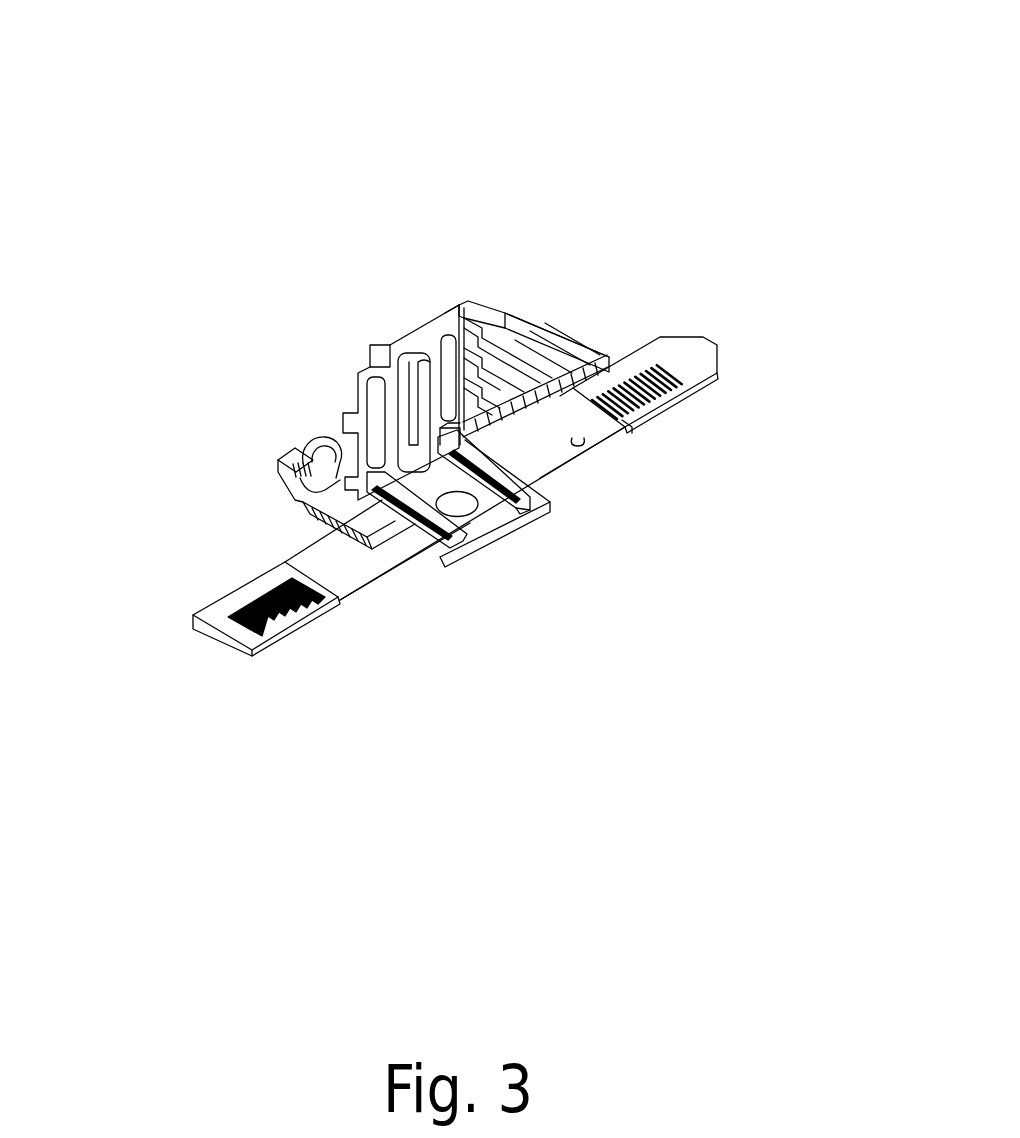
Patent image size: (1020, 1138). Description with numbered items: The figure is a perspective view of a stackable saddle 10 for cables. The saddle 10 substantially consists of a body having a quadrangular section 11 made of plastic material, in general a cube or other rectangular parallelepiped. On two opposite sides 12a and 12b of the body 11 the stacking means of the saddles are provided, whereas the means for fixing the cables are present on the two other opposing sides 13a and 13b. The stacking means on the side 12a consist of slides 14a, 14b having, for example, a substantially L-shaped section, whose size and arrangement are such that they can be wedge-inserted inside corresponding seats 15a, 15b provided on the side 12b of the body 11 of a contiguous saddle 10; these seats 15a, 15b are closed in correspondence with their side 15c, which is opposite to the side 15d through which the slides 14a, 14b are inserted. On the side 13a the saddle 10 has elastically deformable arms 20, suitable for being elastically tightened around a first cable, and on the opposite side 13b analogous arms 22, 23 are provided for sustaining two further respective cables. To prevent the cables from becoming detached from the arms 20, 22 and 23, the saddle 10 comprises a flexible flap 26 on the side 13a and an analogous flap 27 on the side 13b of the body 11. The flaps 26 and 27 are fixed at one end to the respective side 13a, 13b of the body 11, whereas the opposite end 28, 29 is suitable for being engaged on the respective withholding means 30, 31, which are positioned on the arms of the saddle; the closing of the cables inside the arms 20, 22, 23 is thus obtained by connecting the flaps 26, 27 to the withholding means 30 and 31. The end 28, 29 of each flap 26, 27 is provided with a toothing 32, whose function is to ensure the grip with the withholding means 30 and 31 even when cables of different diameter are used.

The saddle 10 is at (686, 117).
The body having a quadrangular section 11 is at (422, 452).
The side 12a is at (427, 335).
The side 12b is at (435, 455).
The side 13a is at (360, 388).
The side 13b is at (473, 330).
The slide 14a is at (380, 350).
The slide 14b is at (448, 302).
The seat 15a is at (383, 485).
The seat 15b is at (445, 457).
The closed side of the seats 15c is at (530, 505).
The insertion side of the seats 15d is at (456, 315).
The elastically deformable arms 20 is at (287, 470).
The arms 22 is at (588, 315).
The arms 23 is at (540, 318).
The flexible flap 26 is at (273, 636).
The flap 27 is at (683, 368).
The end of the flap 28 is at (205, 638).
The end of the flap 29 is at (703, 352).
The withholding means 30 is at (300, 496).
The withholding means 31 is at (528, 315).
The toothing 32 is at (230, 640).